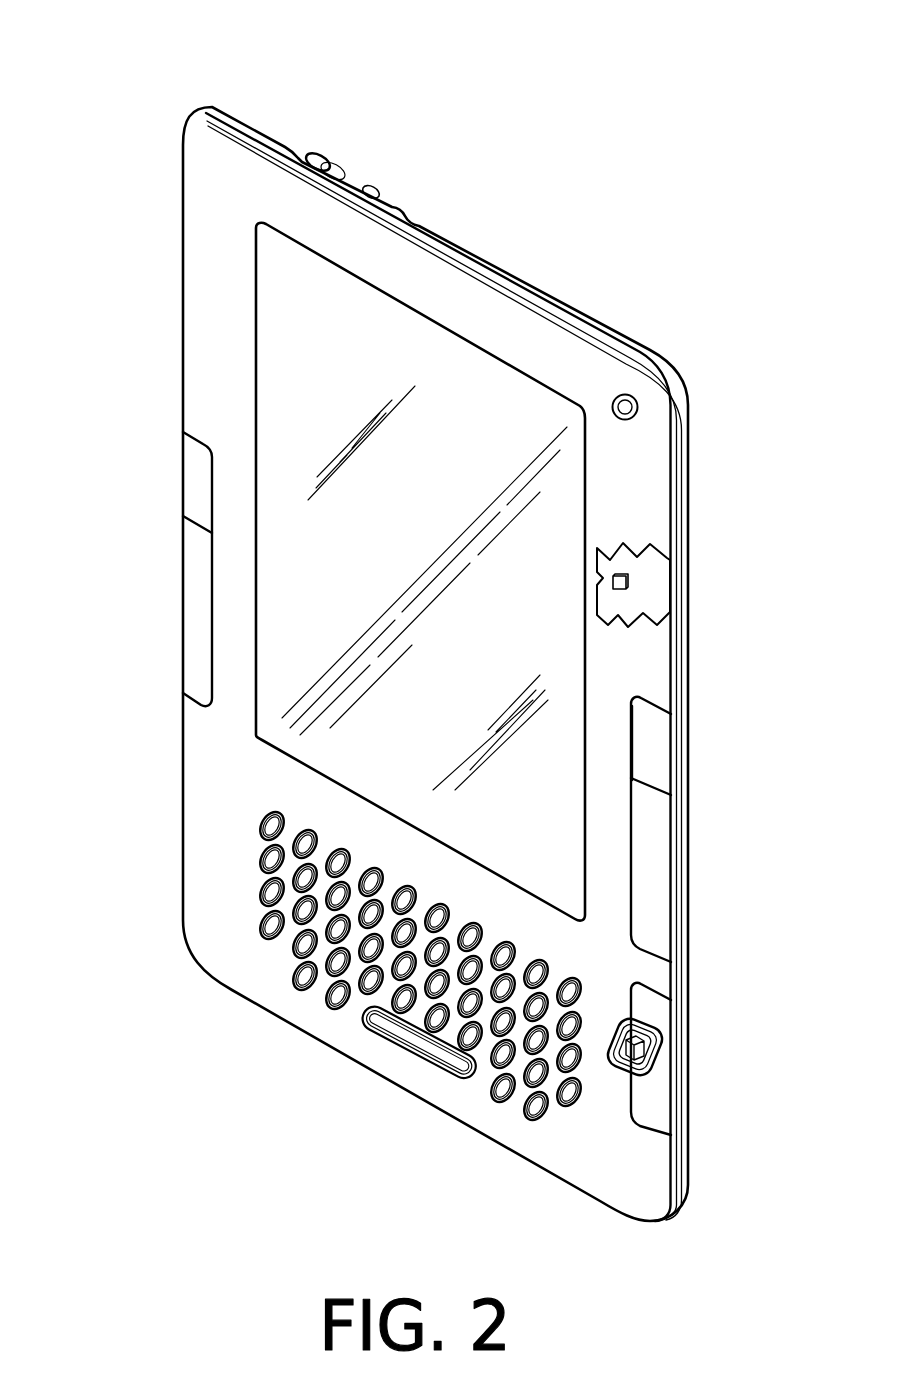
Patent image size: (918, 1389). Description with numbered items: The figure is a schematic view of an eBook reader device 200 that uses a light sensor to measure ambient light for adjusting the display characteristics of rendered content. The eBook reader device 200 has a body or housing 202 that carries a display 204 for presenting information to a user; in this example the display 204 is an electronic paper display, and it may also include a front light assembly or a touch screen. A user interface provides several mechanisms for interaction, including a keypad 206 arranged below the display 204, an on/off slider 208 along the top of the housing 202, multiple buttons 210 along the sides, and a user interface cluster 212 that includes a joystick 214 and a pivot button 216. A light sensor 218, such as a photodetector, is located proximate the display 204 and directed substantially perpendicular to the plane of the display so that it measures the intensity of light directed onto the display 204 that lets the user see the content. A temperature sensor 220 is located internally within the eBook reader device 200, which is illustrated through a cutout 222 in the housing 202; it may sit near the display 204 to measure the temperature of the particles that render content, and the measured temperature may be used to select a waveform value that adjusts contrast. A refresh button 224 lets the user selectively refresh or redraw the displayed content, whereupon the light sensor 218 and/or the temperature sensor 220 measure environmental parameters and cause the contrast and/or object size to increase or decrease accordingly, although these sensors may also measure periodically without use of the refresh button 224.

The eBook reader device 200 is at (742, 50).
The housing 202 is at (457, 272).
The display 204 is at (305, 348).
The keypad 206 is at (248, 969).
The on/off slider 208 is at (331, 163).
The buttons 210 is at (205, 497).
The user interface cluster 212 is at (790, 981).
The joystick 214 is at (640, 1040).
The pivot button 216 is at (660, 1108).
The light sensor 218 is at (630, 394).
The temperature sensor 220 is at (626, 589).
The cutout 222 is at (662, 577).
The refresh button 224 is at (657, 757).